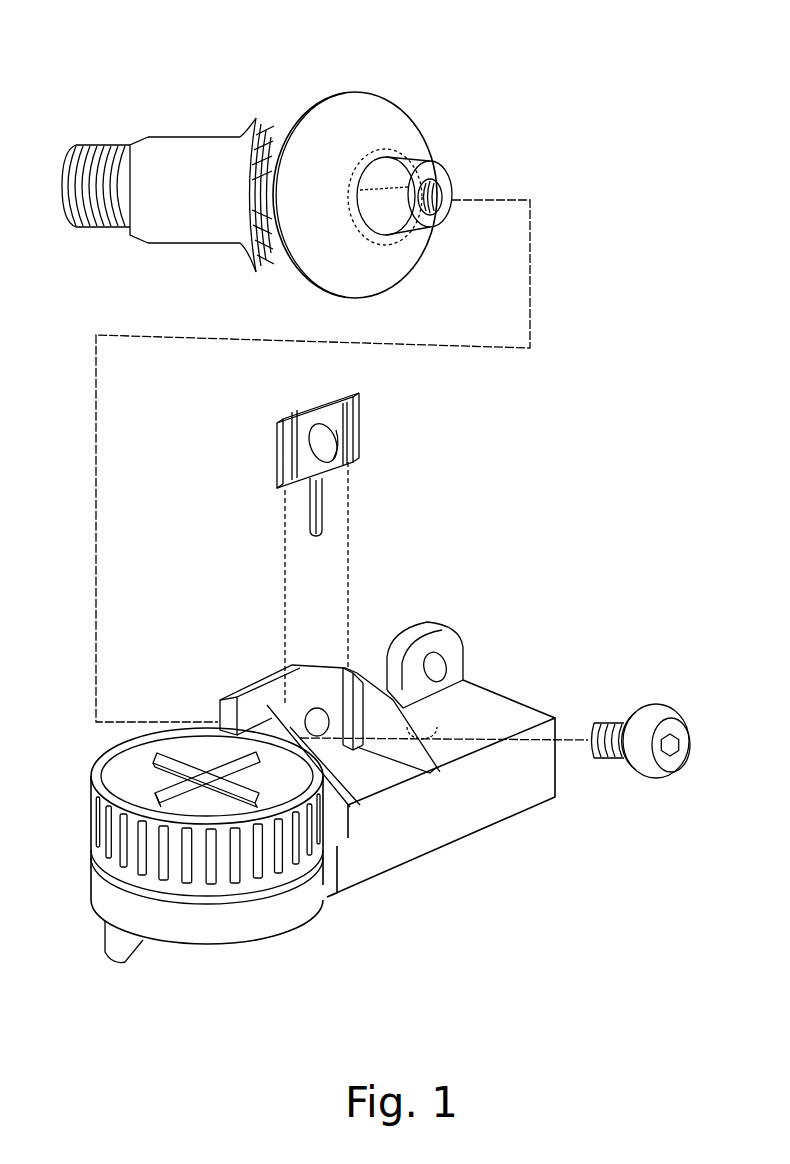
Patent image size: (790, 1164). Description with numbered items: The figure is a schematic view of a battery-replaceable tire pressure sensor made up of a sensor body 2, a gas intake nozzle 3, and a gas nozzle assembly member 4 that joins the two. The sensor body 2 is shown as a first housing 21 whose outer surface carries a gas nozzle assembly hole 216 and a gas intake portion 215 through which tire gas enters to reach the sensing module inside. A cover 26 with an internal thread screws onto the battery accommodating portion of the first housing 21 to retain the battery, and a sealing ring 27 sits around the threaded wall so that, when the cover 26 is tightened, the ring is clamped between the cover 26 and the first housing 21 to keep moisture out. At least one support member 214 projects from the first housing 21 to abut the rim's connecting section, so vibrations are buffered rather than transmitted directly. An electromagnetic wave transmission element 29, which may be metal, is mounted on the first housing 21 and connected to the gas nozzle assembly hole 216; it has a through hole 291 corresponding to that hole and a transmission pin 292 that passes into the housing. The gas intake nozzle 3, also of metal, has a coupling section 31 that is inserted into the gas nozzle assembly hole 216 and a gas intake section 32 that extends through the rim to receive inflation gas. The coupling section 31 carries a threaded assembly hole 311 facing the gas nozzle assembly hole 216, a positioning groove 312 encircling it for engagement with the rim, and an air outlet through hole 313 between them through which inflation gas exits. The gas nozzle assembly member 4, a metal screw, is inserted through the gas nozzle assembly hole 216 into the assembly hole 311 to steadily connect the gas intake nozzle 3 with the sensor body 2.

The sensor body 2 is at (495, 680).
The first housing 21 is at (483, 808).
The support member 214 is at (125, 965).
The gas intake portion 215 is at (400, 655).
The gas nozzle assembly hole 216 is at (310, 735).
The cover 26 is at (134, 762).
The sealing ring 27 is at (225, 893).
The electromagnetic wave transmission element 29 is at (275, 449).
The through hole 291 is at (345, 432).
The transmission pin 292 is at (330, 511).
The gas intake nozzle 3 is at (181, 128).
The coupling section 31 is at (402, 210).
The assembly hole 311 is at (443, 177).
The positioning groove 312 is at (260, 138).
The air outlet through hole 313 is at (393, 170).
The gas intake section 32 is at (113, 230).
The gas nozzle assembly member 4 is at (637, 775).